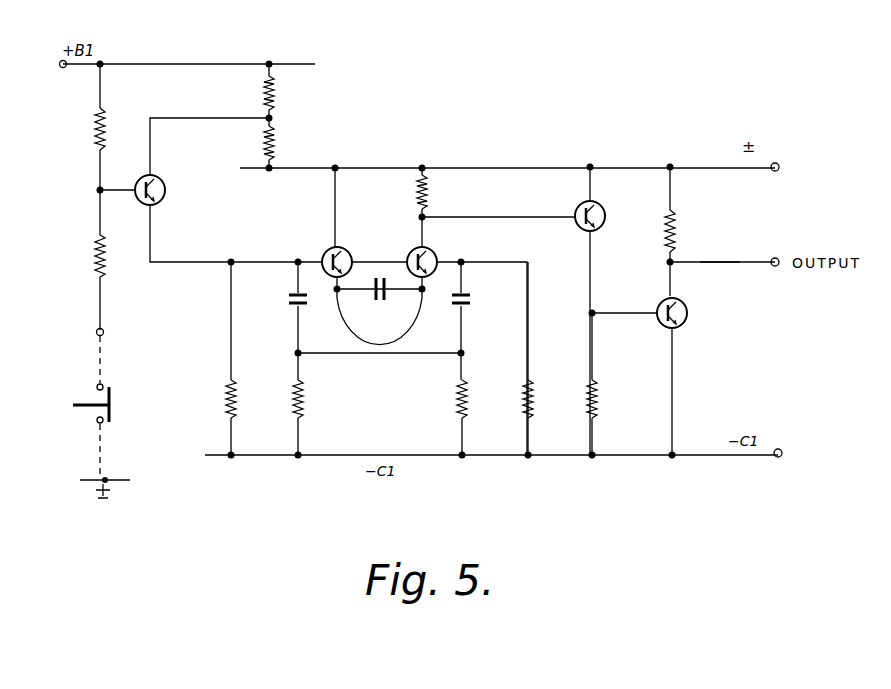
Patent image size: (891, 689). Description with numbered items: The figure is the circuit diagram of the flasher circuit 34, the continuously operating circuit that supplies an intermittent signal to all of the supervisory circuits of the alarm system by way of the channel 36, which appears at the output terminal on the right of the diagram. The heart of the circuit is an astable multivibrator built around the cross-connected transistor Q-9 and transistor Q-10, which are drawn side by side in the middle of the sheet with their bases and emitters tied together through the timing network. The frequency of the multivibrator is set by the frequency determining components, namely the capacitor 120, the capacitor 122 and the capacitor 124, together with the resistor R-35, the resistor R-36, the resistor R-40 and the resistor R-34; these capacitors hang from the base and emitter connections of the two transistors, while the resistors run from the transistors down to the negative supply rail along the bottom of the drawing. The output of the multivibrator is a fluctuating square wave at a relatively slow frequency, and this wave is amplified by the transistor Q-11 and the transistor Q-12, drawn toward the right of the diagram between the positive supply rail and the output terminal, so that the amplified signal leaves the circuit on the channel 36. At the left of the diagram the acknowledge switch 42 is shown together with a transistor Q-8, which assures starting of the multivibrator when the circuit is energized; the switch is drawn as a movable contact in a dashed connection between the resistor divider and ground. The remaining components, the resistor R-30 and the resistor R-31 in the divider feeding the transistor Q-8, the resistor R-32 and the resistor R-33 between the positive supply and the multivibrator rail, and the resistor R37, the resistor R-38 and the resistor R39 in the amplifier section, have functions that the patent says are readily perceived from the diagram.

The resistor R-30 is at (97, 130).
The resistor R-31 is at (69, 256).
The resistor R-32 is at (276, 94).
The resistor R-33 is at (276, 148).
The frequency determining resistor R-34 is at (225, 394).
The frequency determining resistor R-35 is at (305, 409).
The frequency determining resistor R-36 is at (456, 400).
The resistor R37 is at (522, 392).
The resistor R-38 is at (587, 392).
The resistor R39 is at (677, 236).
The frequency determining resistor R-40 is at (428, 192).
The starting transistor Q-8 is at (166, 188).
The multivibrator transistor Q-9 is at (325, 257).
The multivibrator transistor Q-10 is at (434, 253).
The amplifying transistor Q-11 is at (603, 207).
The amplifying transistor Q-12 is at (661, 304).
The acknowledge switch 42 is at (113, 398).
The frequency determining capacitor 120 is at (291, 306).
The frequency determining capacitor 122 is at (374, 294).
The frequency determining capacitor 124 is at (468, 305).
The flasher circuit 34 is at (592, 158).
The channel 36 is at (713, 264).